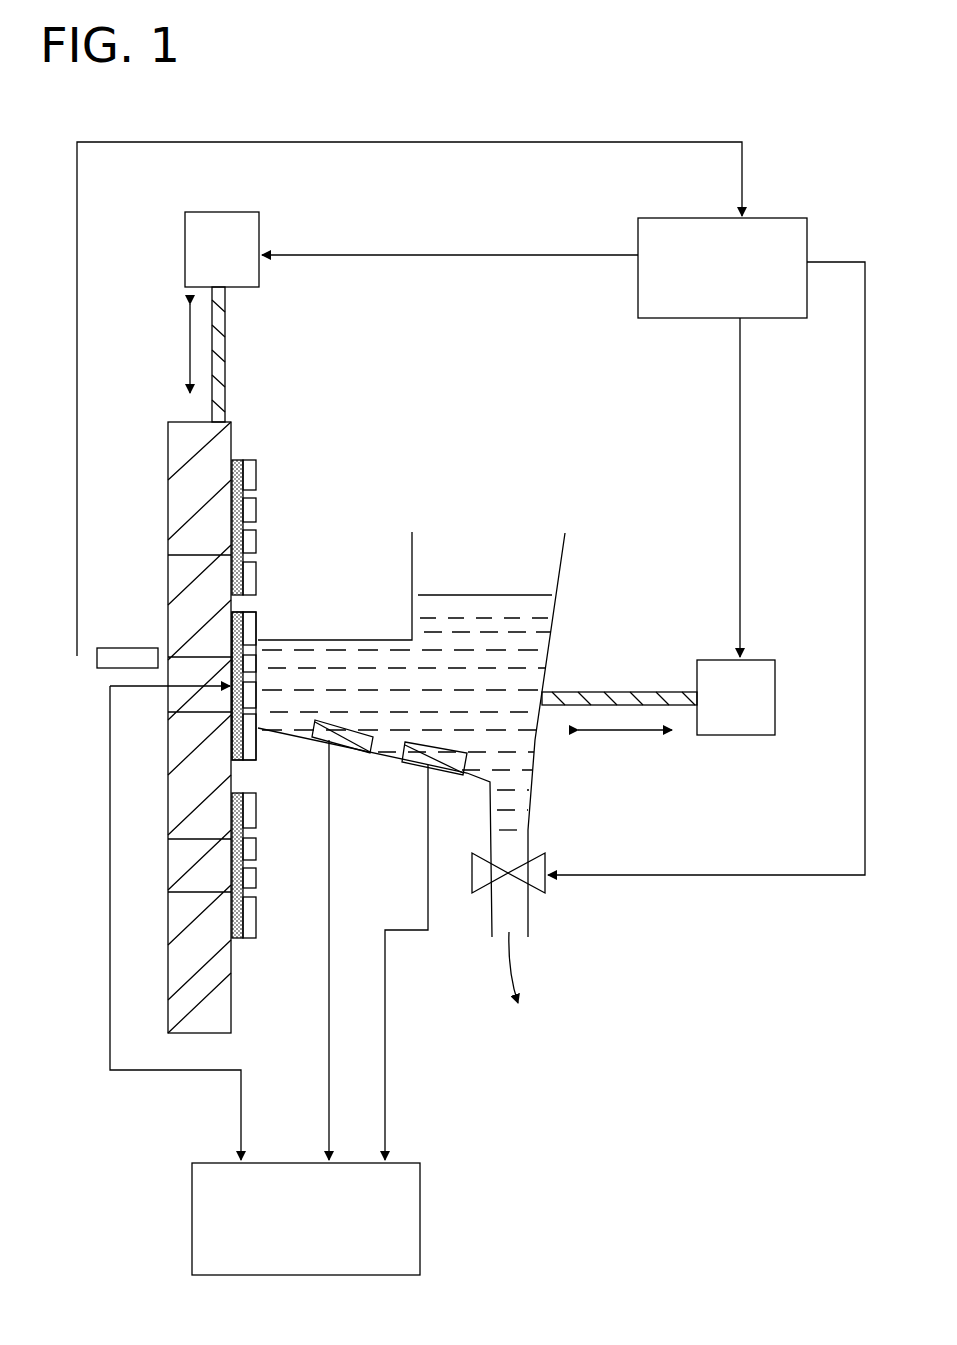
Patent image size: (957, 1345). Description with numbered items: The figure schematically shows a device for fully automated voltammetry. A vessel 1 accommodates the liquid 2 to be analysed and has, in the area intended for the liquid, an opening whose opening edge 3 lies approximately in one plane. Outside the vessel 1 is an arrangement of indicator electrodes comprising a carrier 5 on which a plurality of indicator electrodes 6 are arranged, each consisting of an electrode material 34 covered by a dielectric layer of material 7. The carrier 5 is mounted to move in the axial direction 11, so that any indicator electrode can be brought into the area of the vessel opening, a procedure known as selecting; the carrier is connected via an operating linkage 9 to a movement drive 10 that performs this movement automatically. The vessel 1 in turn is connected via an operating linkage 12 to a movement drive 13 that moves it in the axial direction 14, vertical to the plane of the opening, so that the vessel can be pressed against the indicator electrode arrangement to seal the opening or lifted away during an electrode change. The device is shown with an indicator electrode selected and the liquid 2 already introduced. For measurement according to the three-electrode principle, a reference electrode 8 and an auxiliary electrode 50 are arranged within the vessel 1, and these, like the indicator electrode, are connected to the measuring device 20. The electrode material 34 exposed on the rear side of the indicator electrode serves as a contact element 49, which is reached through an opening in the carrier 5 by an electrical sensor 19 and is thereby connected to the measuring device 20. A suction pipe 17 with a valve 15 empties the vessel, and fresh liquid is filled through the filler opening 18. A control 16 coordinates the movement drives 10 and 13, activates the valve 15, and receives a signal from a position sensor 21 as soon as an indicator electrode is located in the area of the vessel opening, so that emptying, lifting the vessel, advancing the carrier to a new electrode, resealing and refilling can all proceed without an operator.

The vessel 1 is at (555, 618).
The liquid 2 is at (508, 625).
The opening edge 3 is at (270, 633).
The carrier 5 is at (212, 1028).
The indicator electrodes 6 is at (280, 516).
The dielectric layer of material 7 is at (258, 468).
The reference electrode 8 is at (312, 740).
The operating linkage 9 is at (226, 328).
The movement drive 10 is at (222, 249).
The axial direction 11 is at (171, 348).
The operating linkage 12 is at (622, 700).
The movement drive 13 is at (736, 526).
The axial direction 14 is at (625, 749).
The valve 15 is at (535, 868).
The control 16 is at (722, 268).
The suction pipe 17 is at (530, 917).
The filler opening 18 is at (490, 513).
The electrical sensor 19 is at (175, 923).
The measuring device 20 is at (306, 1219).
The position sensor 21 is at (127, 658).
The electrode material 34 is at (245, 440).
The contact element 49 is at (228, 860).
The auxiliary electrode 50 is at (415, 752).